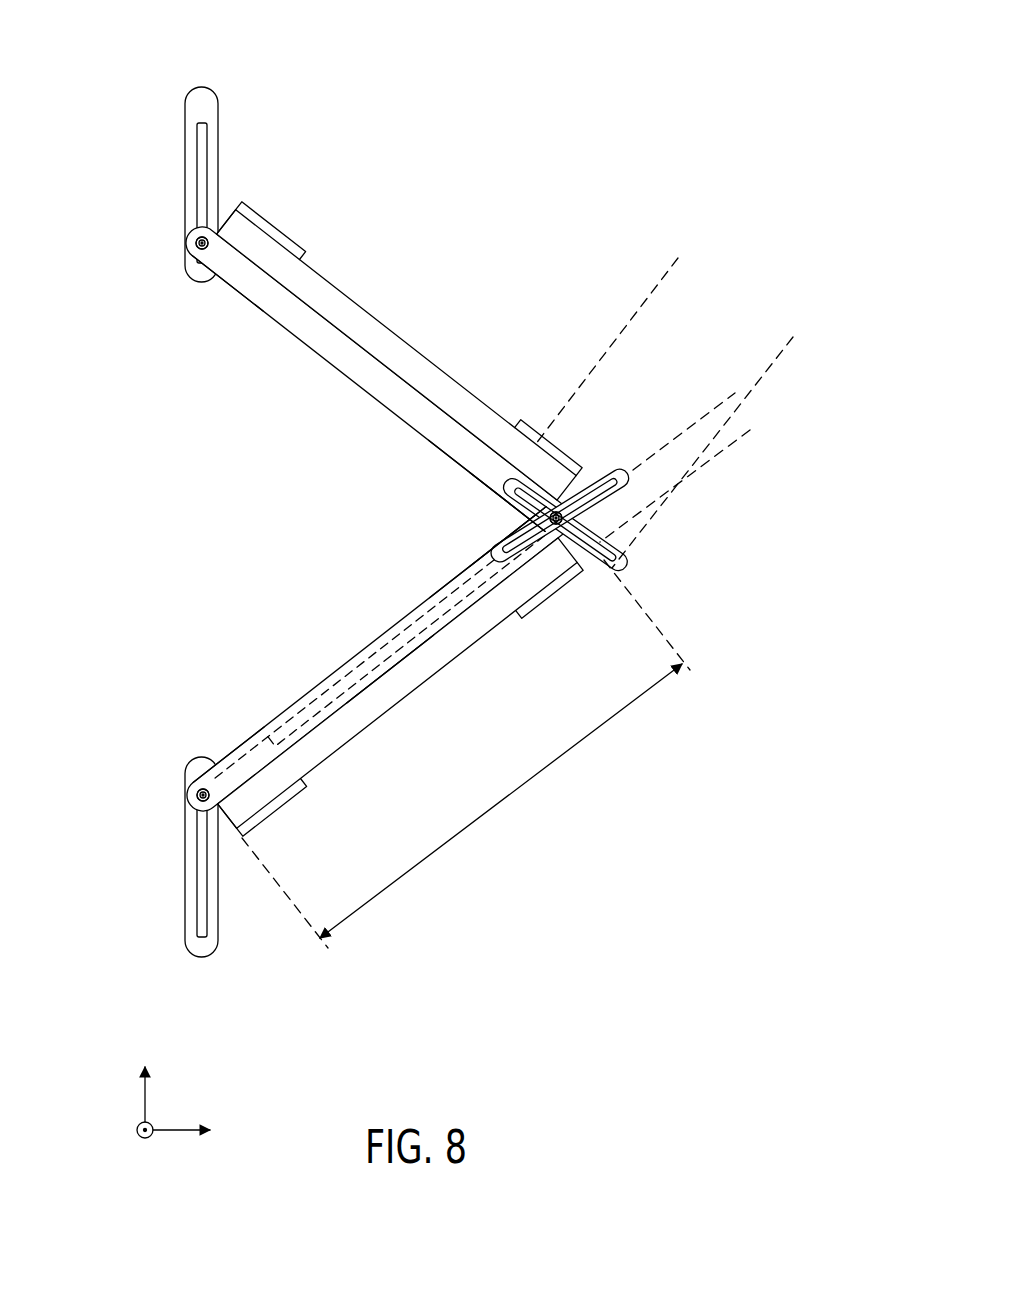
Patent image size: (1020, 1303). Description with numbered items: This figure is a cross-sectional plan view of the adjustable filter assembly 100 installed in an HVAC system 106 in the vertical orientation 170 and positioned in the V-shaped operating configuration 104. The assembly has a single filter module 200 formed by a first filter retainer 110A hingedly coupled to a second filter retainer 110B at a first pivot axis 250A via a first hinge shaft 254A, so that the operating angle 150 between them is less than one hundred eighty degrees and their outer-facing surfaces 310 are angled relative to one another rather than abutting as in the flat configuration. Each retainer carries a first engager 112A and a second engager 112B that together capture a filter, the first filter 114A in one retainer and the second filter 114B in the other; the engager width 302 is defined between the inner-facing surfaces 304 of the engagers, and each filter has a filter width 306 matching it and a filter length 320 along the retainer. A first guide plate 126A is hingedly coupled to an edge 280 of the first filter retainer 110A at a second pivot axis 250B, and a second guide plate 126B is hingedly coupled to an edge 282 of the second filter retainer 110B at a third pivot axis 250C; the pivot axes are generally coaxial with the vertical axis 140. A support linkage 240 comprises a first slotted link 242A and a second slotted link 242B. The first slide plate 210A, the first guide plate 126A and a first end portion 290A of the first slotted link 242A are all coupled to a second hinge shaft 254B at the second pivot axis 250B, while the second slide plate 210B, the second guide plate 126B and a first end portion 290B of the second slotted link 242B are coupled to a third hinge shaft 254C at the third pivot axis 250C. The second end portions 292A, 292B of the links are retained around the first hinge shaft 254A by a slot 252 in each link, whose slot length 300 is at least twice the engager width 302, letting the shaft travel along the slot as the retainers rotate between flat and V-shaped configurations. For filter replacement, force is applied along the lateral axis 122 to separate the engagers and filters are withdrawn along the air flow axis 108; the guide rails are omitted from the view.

The adjustable filter assembly 100 is at (600, 122).
The V-shaped operating configuration 104 is at (195, 478).
The HVAC system 106 is at (580, 55).
The air flow axis 108 is at (177, 1095).
The first filter retainer 110A is at (407, 495).
The second filter retainer 110B is at (382, 668).
The first engager 112A is at (286, 228).
The second engager 112B is at (548, 452).
The first filter 114A is at (416, 330).
The second filter 114B is at (356, 762).
The lateral axis 122 is at (140, 1122).
The first guide plate 126A is at (198, 172).
The second guide plate 126B is at (198, 872).
The vertical axis 140 is at (142, 1140).
The operating angle 150 is at (478, 488).
The vertical orientation 170 is at (622, 195).
The filter module 200 is at (570, 268).
The first slide plate 210A is at (192, 92).
The second slide plate 210B is at (195, 950).
The support linkage 240 is at (630, 542).
The first slotted link 242A is at (300, 345).
The second slotted link 242B is at (352, 664).
The first pivot axis 250A is at (557, 527).
The second pivot axis 250B is at (194, 246).
The third pivot axis 250C is at (195, 798).
The slot 252 is at (592, 520).
The first hinge shaft 254A is at (546, 452).
The second hinge shaft 254B is at (208, 262).
The third hinge shaft 254C is at (192, 790).
The edge 280 is at (233, 205).
The edge 282 is at (233, 840).
The first end portion 290A is at (240, 312).
The first end portion 290B is at (238, 752).
The second end portion 292A is at (482, 480).
The second end portion 292B is at (480, 548).
The slot length 300 is at (782, 350).
The engager width 302 is at (745, 442).
The inner-facing surfaces 304 is at (462, 600).
The filter width 306 is at (372, 694).
The outer-facing surfaces 310 is at (714, 401).
The filter length 320 is at (466, 754).